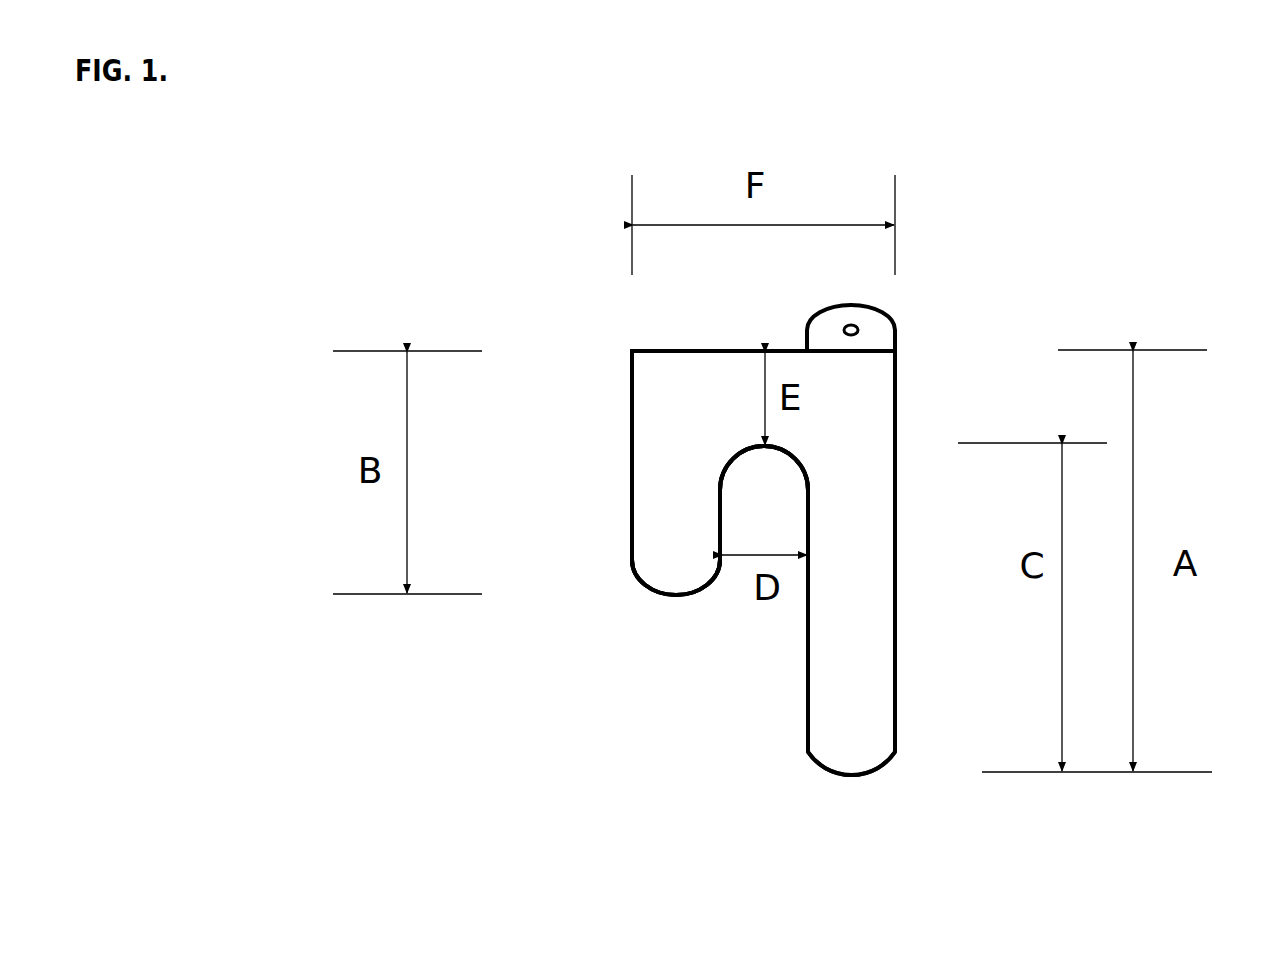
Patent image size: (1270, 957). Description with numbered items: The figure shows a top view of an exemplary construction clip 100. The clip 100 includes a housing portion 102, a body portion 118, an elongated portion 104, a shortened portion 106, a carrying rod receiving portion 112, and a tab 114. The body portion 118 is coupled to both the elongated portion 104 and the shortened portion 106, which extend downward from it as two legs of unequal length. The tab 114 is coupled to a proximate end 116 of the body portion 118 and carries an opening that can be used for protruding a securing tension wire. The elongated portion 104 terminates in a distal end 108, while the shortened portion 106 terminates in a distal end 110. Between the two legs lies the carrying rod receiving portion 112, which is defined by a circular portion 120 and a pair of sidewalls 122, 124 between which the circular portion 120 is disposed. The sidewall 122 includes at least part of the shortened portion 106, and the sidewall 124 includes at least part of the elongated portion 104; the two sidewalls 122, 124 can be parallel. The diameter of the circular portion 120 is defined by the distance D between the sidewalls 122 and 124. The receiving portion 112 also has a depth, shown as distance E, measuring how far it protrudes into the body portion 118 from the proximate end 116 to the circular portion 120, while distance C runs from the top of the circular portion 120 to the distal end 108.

The construction clip 100 is at (1145, 238).
The housing portion 102 is at (895, 518).
The elongated portion 104 is at (895, 665).
The shortened portion 106 is at (630, 505).
The distal end 108 is at (848, 777).
The distal end 110 is at (675, 596).
The carrying rod receiving portion 112 is at (760, 448).
The tab 114 is at (895, 333).
The proximate end 116 is at (763, 352).
The body portion 118 is at (895, 415).
The circular portion 120 is at (740, 448).
The sidewall 122 is at (718, 530).
The sidewall 124 is at (810, 507).